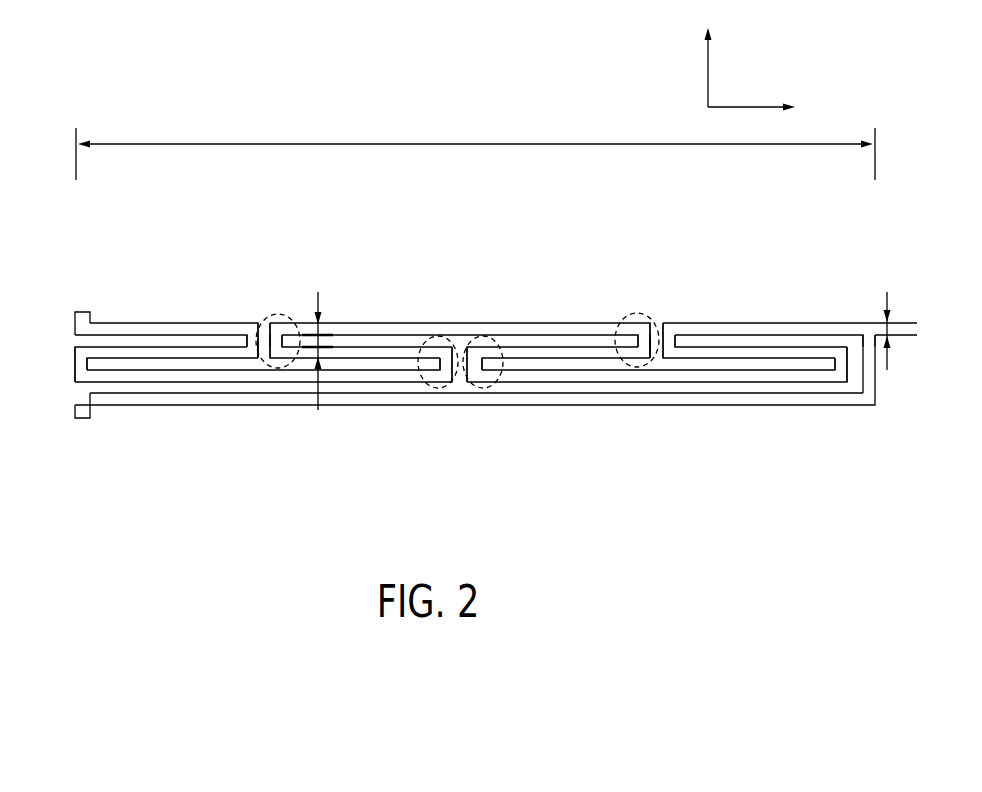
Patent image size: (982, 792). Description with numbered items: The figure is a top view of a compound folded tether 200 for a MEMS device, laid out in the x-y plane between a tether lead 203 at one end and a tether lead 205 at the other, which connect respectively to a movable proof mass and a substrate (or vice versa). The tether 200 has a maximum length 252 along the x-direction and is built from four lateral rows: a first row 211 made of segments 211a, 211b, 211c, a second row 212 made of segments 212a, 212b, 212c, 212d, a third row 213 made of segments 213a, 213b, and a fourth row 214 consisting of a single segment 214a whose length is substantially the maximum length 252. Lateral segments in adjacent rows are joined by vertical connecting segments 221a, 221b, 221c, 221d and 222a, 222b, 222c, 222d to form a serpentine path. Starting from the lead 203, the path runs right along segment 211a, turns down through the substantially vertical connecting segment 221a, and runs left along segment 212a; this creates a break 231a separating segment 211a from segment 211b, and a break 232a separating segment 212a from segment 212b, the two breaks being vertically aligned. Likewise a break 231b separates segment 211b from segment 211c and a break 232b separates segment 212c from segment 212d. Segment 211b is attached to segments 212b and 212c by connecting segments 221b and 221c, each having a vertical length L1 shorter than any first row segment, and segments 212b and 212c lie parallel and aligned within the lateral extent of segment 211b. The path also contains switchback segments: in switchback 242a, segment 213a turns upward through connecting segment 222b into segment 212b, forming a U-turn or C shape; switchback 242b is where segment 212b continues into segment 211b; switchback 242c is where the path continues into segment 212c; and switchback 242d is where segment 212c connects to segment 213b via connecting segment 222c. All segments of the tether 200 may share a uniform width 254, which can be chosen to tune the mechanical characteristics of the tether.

The tether 200 is at (113, 96).
The tether lead 203 is at (80, 313).
The tether lead 205 is at (80, 417).
The first row 211 is at (77, 327).
The lateral segment 211a is at (145, 323).
The lateral segment 211b is at (462, 323).
The lateral segment 211c is at (824, 323).
The second row 212 is at (77, 356).
The lateral segment 212a is at (163, 350).
The lateral segment 212b is at (355, 350).
The lateral segment 212c is at (580, 350).
The lateral segment 212d is at (762, 350).
The third row 213 is at (77, 374).
The lateral segment 213a is at (224, 380).
The lateral segment 213b is at (686, 380).
The fourth row 214 is at (77, 400).
The lateral segment 214a is at (730, 397).
The connecting segment 221a is at (256, 338).
The connecting segment 221b is at (287, 328).
The connecting segment 221c is at (650, 338).
The connecting segment 221d is at (676, 338).
The connecting segment 222a is at (88, 373).
The connecting segment 222b is at (440, 369).
The connecting segment 222c is at (476, 369).
The connecting segment 222d is at (848, 380).
The break 231a is at (265, 318).
The break 231b is at (660, 318).
The break 232a is at (262, 368).
The break 232b is at (657, 362).
The switchback segment 242a is at (450, 392).
The switchback segment 242b is at (280, 364).
The switchback segment 242c is at (652, 367).
The switchback segment 242d is at (473, 392).
The maximum length 252 is at (480, 142).
The width 254 is at (887, 306).
The length L1 is at (320, 402).